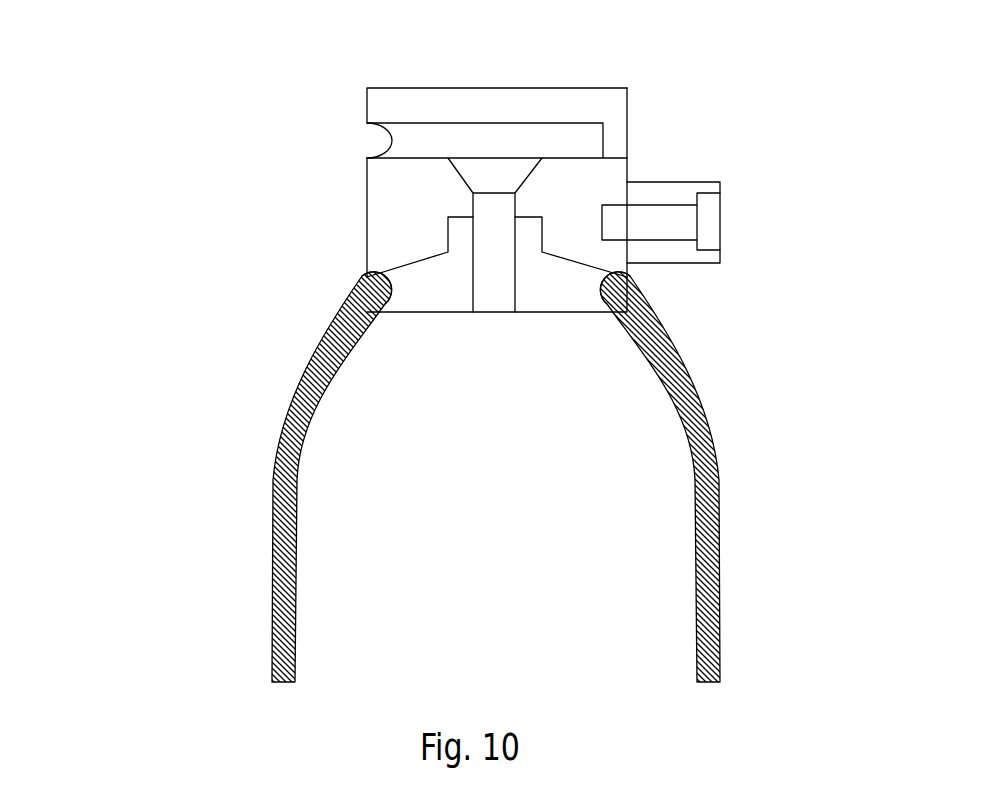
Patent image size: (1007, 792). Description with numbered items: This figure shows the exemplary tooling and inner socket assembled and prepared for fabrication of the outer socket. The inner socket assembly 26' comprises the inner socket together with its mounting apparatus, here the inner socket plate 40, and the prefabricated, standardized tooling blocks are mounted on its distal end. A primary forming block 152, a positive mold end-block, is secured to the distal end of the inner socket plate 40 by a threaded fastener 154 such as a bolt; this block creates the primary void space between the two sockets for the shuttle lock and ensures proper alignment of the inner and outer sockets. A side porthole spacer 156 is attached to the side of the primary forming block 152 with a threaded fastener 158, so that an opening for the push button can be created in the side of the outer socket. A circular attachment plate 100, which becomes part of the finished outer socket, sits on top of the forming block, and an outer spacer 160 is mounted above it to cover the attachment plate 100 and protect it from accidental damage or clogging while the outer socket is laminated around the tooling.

The inner socket assembly 26' is at (602, 477).
The inner socket plate 40 is at (577, 287).
The attachment plate 100 is at (402, 147).
The outer spacer 160 is at (615, 123).
The threaded fastener 154 is at (493, 228).
The primary forming block 152 is at (400, 251).
The side porthole spacer 156 is at (683, 192).
The threaded fastener 158 is at (723, 228).